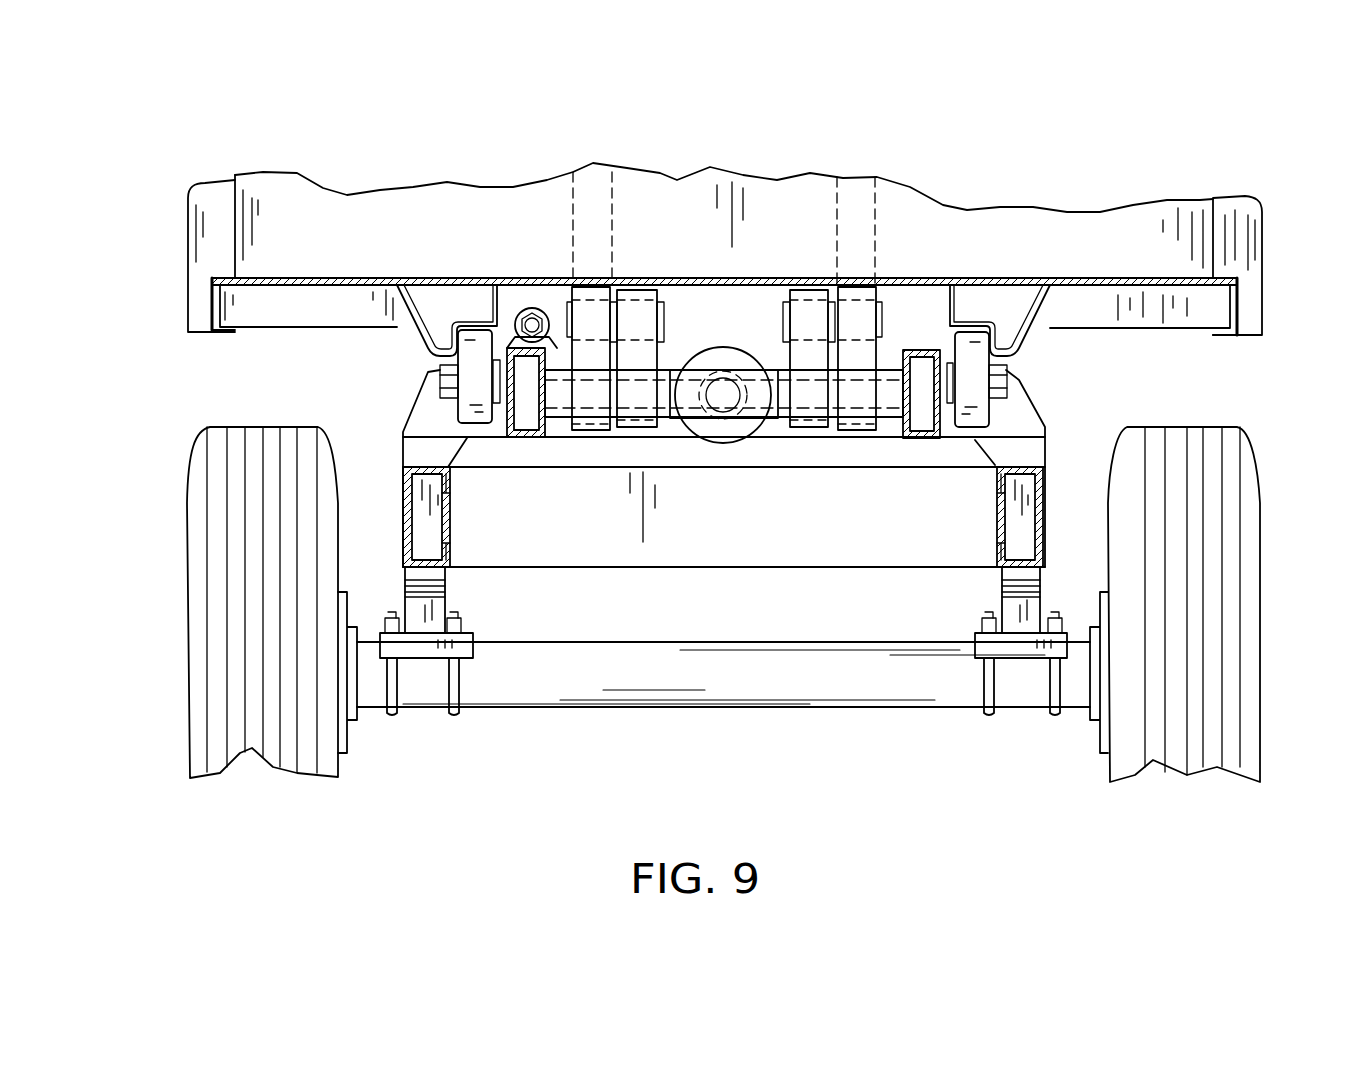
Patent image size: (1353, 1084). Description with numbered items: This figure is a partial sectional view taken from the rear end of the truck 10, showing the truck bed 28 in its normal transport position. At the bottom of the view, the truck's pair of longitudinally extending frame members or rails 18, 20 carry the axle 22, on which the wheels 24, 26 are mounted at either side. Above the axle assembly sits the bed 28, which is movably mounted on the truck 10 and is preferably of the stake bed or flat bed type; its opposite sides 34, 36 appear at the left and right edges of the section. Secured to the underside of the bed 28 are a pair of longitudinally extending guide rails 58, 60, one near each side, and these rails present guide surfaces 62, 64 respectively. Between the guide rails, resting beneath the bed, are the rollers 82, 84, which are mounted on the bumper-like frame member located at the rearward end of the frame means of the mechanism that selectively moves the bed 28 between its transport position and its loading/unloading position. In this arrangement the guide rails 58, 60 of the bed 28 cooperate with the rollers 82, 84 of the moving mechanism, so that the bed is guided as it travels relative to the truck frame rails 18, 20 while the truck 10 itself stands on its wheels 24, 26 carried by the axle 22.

The truck 10 is at (707, 742).
The frame member 18 is at (423, 517).
The frame member 20 is at (1033, 508).
The axle 22 is at (850, 682).
The wheel 24 is at (277, 432).
The wheel 26 is at (1190, 443).
The bed 28 is at (1107, 267).
The side 34 is at (175, 313).
The side 36 is at (1267, 305).
The guide rail 58 is at (433, 302).
The guide rail 60 is at (988, 303).
The guide surface 62 is at (457, 357).
The guide surface 64 is at (993, 353).
The roller 82 is at (470, 405).
The roller 84 is at (987, 413).